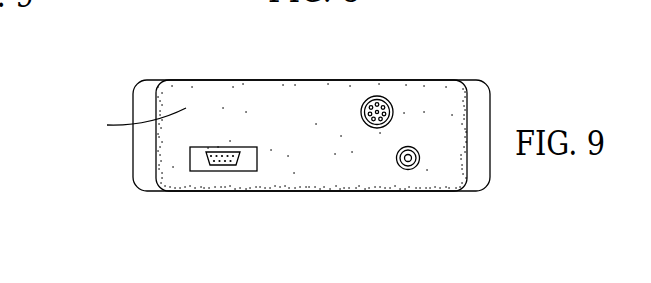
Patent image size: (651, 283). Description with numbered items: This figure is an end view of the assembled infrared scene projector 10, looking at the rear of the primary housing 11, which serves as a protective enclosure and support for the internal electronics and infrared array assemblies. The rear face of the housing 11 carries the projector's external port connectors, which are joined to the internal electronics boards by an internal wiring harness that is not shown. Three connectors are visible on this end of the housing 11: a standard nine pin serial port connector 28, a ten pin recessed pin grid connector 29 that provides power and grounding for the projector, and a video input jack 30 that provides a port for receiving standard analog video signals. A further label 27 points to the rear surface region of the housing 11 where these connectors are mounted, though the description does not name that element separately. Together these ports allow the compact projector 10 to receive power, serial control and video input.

The infrared scene projector 10 is at (190, 71).
The primary housing 11 is at (430, 83).
The rear surface 27 is at (132, 123).
The serial port connector 28 is at (217, 170).
The recessed pin grid connector 29 is at (366, 124).
The video input jack 30 is at (408, 170).